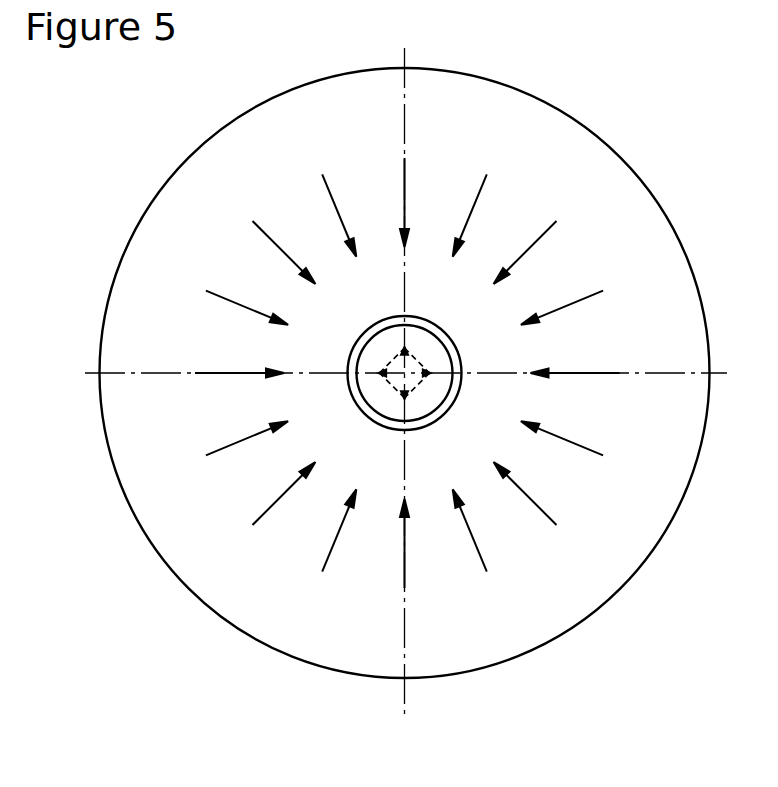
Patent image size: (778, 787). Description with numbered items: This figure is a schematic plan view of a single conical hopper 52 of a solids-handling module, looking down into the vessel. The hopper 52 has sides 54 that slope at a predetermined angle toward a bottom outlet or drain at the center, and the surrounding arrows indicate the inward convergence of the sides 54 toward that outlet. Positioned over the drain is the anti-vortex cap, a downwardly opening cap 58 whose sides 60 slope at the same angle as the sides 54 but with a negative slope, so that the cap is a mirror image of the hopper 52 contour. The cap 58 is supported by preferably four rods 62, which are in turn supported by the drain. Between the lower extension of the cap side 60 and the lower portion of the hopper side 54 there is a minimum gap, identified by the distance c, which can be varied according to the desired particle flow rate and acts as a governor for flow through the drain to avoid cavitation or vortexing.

The conical hopper 52 is at (143, 213).
The sides 54 is at (182, 250).
The downwardly opening cap 58 is at (422, 302).
The sides of the cap 60 is at (388, 338).
The rods 62 is at (380, 373).
The distance c is at (462, 416).